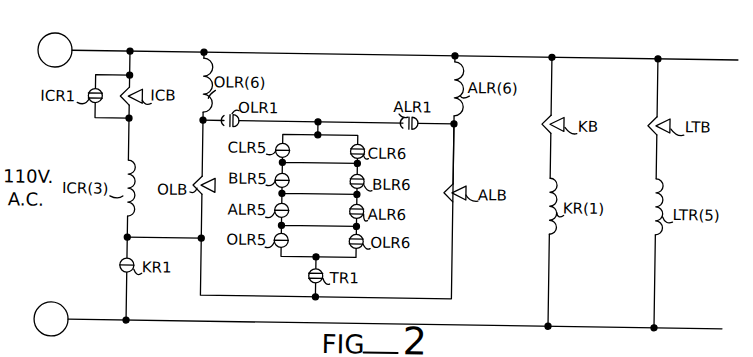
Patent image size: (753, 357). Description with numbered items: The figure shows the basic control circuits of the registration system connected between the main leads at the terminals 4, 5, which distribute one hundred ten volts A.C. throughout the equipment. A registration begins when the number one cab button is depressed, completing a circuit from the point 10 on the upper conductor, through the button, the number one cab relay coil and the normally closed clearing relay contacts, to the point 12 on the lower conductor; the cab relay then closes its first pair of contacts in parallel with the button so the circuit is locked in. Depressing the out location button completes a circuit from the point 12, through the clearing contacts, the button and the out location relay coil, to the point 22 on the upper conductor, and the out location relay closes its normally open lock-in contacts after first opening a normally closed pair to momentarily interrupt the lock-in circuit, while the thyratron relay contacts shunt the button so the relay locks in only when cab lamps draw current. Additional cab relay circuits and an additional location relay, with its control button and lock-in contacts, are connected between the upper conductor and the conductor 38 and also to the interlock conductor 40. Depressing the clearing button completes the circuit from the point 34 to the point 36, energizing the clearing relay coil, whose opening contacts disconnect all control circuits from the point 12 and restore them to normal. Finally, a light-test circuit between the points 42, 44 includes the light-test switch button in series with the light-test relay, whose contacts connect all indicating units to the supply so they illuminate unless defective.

The terminal 4 is at (55, 50).
The terminal 5 is at (51, 319).
The point on conductor 4 10 is at (130, 48).
The point on conductor 5 12 is at (130, 321).
The point on conductor 4 22 is at (204, 48).
The point on conductor 4 34 is at (552, 49).
The point on conductor 5 36 is at (552, 321).
The conductor 38 is at (184, 238).
The interlock conductor 40 is at (321, 127).
The point on conductor 4 42 is at (658, 49).
The point on conductor 5 44 is at (658, 321).